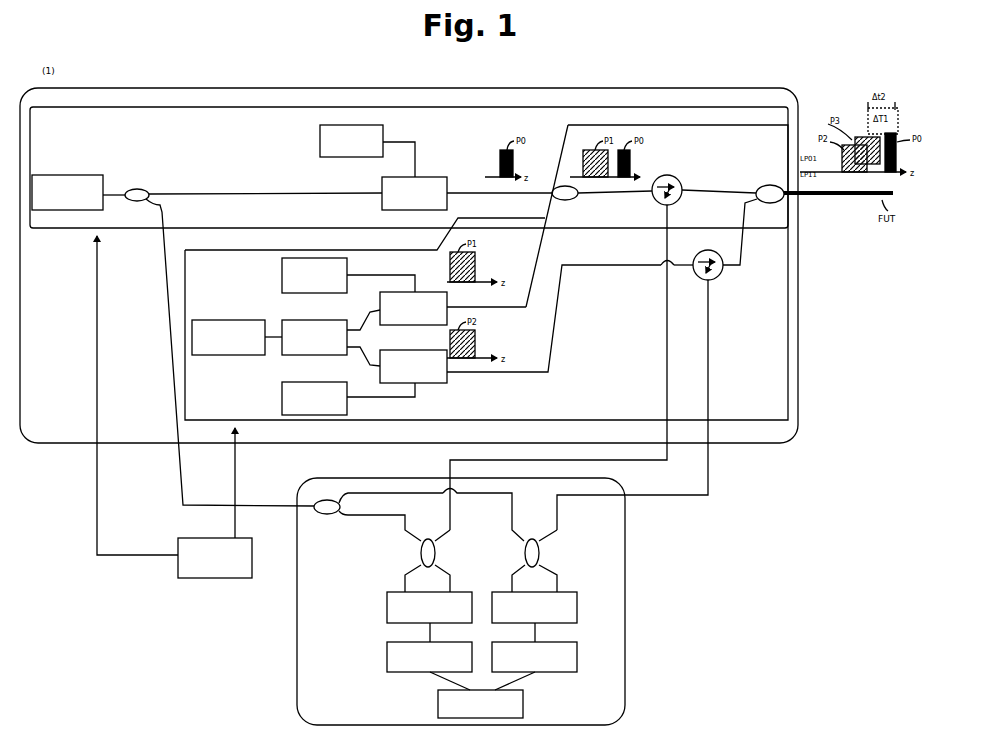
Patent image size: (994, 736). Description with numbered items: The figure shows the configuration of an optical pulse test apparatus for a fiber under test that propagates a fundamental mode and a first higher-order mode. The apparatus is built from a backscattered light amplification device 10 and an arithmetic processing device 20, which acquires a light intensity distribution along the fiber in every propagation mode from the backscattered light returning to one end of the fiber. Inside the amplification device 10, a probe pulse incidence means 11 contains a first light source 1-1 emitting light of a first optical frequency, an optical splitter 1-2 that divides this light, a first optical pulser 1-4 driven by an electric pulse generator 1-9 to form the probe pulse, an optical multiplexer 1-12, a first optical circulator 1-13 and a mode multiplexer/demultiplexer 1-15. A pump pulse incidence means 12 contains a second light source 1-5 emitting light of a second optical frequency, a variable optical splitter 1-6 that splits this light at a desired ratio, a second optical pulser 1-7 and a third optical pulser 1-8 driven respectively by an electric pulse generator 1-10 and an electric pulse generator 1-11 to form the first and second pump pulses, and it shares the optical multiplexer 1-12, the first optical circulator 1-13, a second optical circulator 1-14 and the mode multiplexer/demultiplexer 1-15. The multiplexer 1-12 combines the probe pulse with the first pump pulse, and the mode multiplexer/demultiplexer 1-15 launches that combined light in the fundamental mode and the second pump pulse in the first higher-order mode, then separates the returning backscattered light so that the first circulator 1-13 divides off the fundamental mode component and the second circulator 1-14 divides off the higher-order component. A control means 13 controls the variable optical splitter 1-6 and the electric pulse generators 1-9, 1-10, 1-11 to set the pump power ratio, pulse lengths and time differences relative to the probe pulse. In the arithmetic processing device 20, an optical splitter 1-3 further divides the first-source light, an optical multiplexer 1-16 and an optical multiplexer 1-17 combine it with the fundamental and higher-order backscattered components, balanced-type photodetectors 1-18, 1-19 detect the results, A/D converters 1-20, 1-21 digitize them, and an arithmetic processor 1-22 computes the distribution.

The backscattered light amplification device 10 is at (237, 88).
The probe pulse incidence means 11 is at (223, 107).
The pump pulse incidence means 12 is at (528, 420).
The control means 13 is at (212, 578).
The arithmetic processing device 20 is at (297, 653).
The first light source 1-1 is at (50, 175).
The optical splitter 1-2 is at (137, 189).
The optical splitter 1-3 is at (322, 513).
The first optical pulser 1-4 is at (397, 210).
The second light source 1-5 is at (215, 355).
The variable optical splitter 1-6 is at (305, 355).
The second optical pulser 1-7 is at (405, 325).
The third optical pulser 1-8 is at (420, 350).
The electric pulse generator 1-9 is at (340, 125).
The electric pulse generator 1-10 is at (282, 276).
The electric pulse generator 1-11 is at (282, 398).
The optical multiplexer 1-12 is at (557, 199).
The first optical circulator 1-13 is at (678, 178).
The second optical circulator 1-14 is at (718, 278).
The mode multiplexer/demultiplexer 1-15 is at (780, 201).
The optical multiplexer 1-16 is at (421, 553).
The optical multiplexer 1-17 is at (539, 553).
The balanced-type photodetector 1-18 is at (387, 613).
The balanced-type photodetector 1-19 is at (577, 613).
The A/D converter 1-20 is at (387, 663).
The A/D converter 1-21 is at (577, 663).
The arithmetic processor 1-22 is at (438, 706).